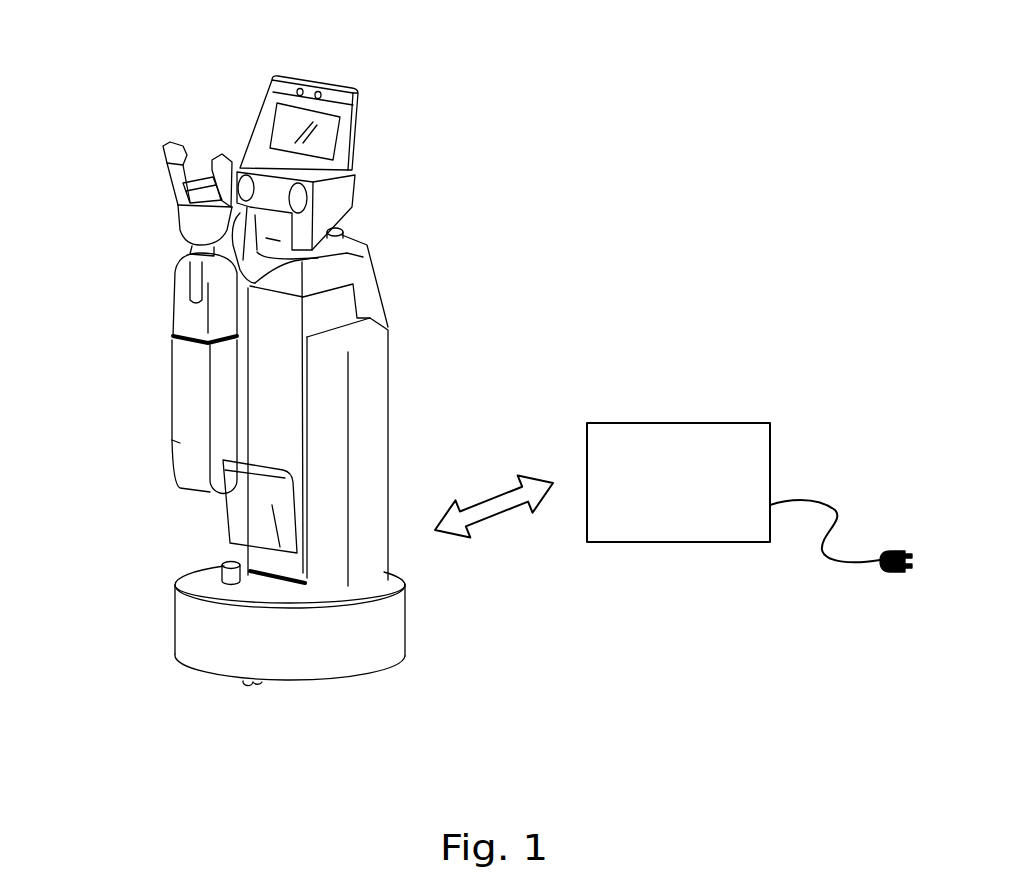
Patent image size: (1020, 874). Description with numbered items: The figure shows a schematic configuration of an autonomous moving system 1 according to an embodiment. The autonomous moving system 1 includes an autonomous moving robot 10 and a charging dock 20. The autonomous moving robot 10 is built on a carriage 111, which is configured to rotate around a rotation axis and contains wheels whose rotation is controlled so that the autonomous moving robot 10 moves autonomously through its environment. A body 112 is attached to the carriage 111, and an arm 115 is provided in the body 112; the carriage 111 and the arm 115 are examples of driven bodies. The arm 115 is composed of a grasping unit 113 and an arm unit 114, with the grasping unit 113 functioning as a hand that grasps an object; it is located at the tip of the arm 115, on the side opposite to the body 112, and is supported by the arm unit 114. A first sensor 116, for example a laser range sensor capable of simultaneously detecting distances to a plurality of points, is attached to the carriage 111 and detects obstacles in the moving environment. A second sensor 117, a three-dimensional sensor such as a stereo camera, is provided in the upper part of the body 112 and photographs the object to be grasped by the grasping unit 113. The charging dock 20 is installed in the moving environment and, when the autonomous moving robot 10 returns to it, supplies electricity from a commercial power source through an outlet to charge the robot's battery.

The autonomous moving system 1 is at (818, 62).
The autonomous moving robot 10 is at (326, 64).
The charging dock 20 is at (712, 423).
The carriage 111 is at (210, 630).
The body 112 is at (375, 375).
The grasping unit 113 is at (178, 231).
The arm unit 114 is at (178, 318).
The arm 115 is at (98, 225).
The first sensor 116 is at (218, 573).
The second sensor 117 is at (280, 135).